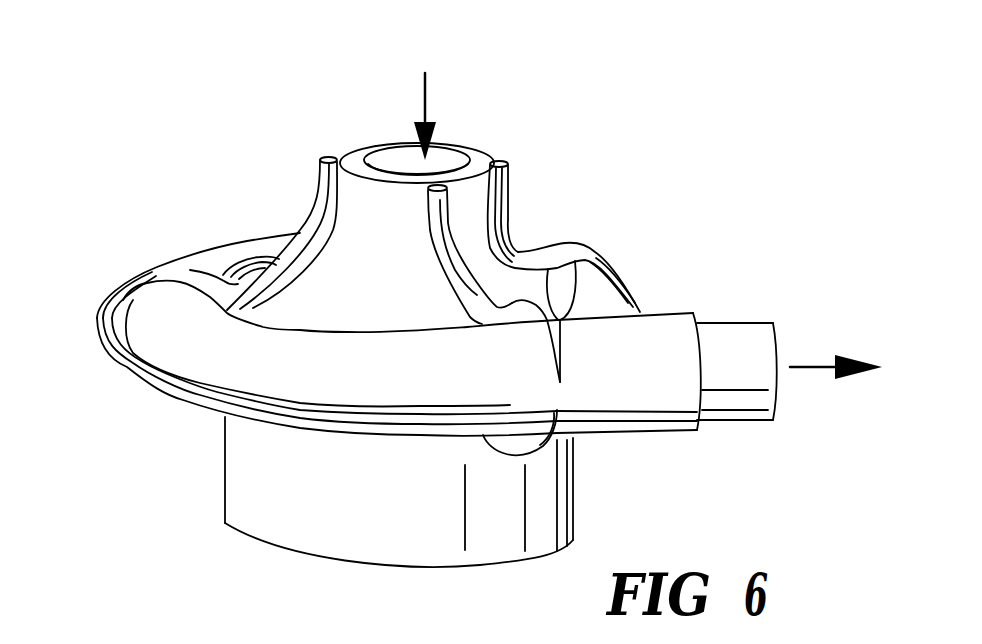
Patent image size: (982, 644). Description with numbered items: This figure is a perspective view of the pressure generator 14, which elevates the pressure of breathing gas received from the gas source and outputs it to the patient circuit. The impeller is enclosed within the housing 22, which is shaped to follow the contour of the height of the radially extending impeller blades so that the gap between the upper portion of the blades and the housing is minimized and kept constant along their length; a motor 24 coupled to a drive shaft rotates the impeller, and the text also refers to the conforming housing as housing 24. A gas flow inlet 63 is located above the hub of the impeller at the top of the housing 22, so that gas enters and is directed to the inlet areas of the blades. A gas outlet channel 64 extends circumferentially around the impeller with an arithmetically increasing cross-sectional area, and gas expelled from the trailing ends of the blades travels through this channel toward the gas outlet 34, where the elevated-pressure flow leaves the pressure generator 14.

The pressure generator 14 is at (104, 244).
The housing 22 is at (193, 372).
The motor 24 is at (287, 520).
The gas outlet 34 is at (776, 333).
The gas flow inlet 63 is at (450, 158).
The gas outlet channel 64 is at (218, 257).